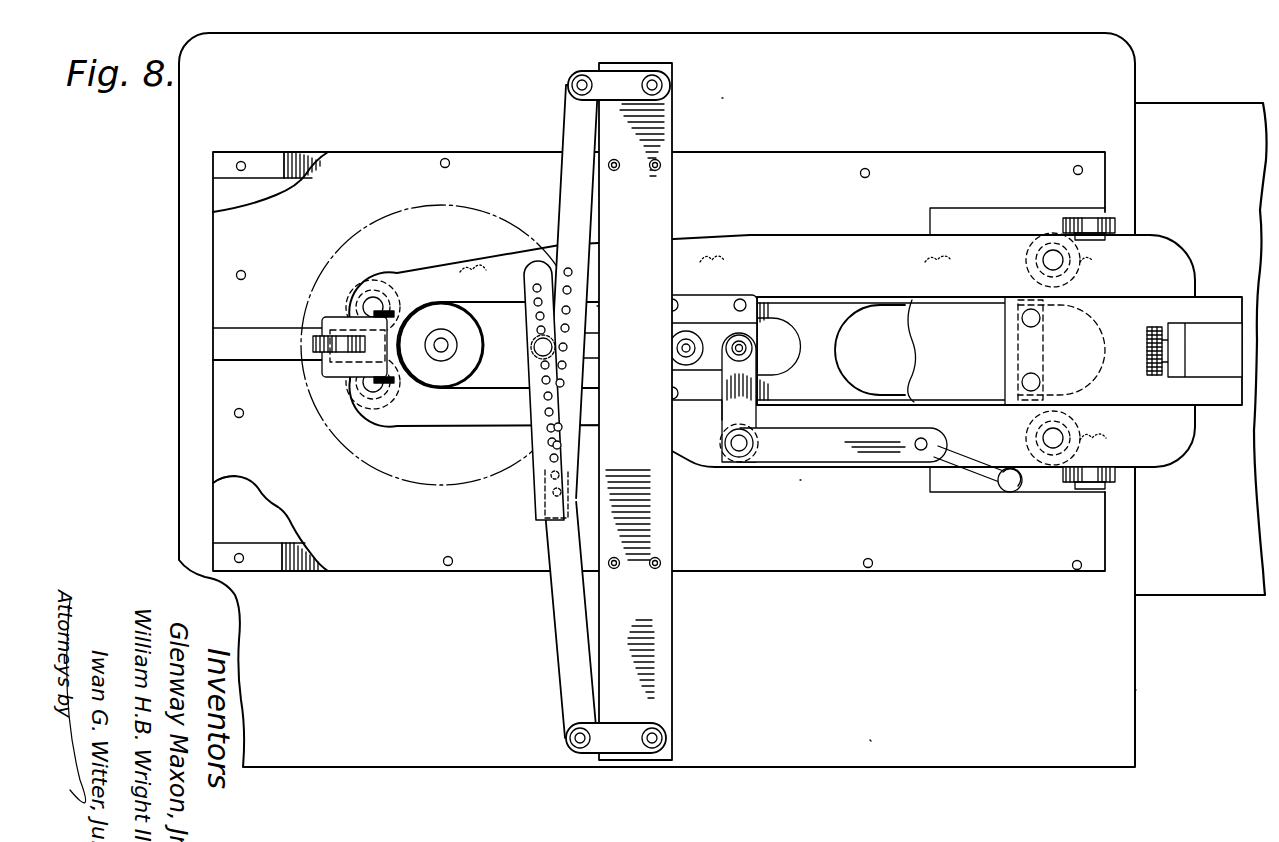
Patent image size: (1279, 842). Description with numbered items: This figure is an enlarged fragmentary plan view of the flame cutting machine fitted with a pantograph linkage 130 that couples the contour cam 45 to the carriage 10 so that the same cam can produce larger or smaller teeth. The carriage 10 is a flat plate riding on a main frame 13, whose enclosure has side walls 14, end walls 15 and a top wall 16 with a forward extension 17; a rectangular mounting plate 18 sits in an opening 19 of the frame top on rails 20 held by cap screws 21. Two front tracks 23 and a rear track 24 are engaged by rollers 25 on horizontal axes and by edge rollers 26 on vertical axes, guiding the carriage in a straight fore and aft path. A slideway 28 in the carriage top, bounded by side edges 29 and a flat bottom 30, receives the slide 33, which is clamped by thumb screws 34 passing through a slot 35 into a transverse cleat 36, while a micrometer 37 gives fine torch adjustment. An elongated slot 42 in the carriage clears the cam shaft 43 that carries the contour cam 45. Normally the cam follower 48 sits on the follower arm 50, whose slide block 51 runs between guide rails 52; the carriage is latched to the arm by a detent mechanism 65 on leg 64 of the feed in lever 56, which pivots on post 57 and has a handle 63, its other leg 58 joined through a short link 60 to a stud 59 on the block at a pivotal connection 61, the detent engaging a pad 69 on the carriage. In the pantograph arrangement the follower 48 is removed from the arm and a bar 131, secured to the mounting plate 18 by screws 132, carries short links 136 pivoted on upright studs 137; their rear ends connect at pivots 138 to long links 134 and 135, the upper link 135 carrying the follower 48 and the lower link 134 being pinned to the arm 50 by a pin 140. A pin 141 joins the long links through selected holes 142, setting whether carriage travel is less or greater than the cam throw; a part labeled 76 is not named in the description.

The carriage 10 is at (1182, 216).
The main frame 13 is at (156, 198).
The side walls 14 is at (462, 20).
The end walls 15 is at (178, 420).
The top wall 16 is at (870, 742).
The forward extension of the top 17 is at (1136, 692).
The mounting plate 18 is at (213, 258).
The rectangular opening 19 is at (213, 505).
The rails 20 is at (262, 163).
The cap screws 21 is at (449, 160).
The front tracks 23 is at (1007, 212).
The rear track 24 is at (213, 345).
The rollers 25 is at (318, 346).
The edge rollers 26 is at (352, 293).
The slideway 28 is at (812, 300).
The side edges 29 is at (927, 351).
The bottom 30 is at (840, 347).
The slide 33 is at (1226, 303).
The thumb screws 34 is at (1040, 376).
The slot 35 is at (906, 290).
The transverse cleat 36 is at (1016, 346).
The micrometer 37 is at (1153, 327).
The elongated slot 42 is at (490, 398).
The cam shaft 43 is at (441, 345).
The contour cam 45 is at (378, 214).
The cam follower 48 is at (534, 349).
The follower arm 50 is at (590, 360).
The slide block 51 is at (716, 325).
The guide rails 52 is at (694, 291).
The feed in lever 56 is at (810, 491).
The upright post 57 is at (738, 458).
The lever leg 58 is at (766, 386).
The stud 59 is at (669, 348).
The short link 60 is at (722, 420).
The pivotal connection 61 is at (752, 348).
The handle 63 is at (1007, 488).
The lever leg 64 is at (823, 447).
The detent mechanism 65 is at (906, 490).
The pad 69 is at (950, 442).
The rail edge 76 is at (1186, 596).
The pantograph linkage 130 is at (735, 99).
The elongated bar 131 is at (664, 211).
The screws 132 is at (661, 165).
The lower long link 134 is at (568, 179).
The upper long link 135 is at (556, 612).
The short links 136 is at (640, 68).
The upright stud 137 is at (668, 81).
The pivotal connection 138 is at (571, 85).
The pin 140 is at (590, 302).
The pin 141 is at (548, 462).
The holes 142 is at (575, 290).